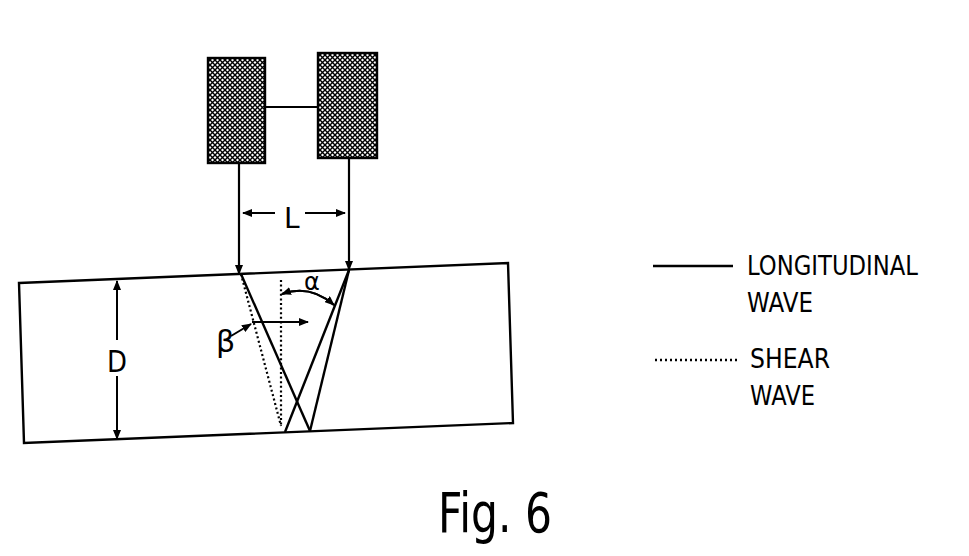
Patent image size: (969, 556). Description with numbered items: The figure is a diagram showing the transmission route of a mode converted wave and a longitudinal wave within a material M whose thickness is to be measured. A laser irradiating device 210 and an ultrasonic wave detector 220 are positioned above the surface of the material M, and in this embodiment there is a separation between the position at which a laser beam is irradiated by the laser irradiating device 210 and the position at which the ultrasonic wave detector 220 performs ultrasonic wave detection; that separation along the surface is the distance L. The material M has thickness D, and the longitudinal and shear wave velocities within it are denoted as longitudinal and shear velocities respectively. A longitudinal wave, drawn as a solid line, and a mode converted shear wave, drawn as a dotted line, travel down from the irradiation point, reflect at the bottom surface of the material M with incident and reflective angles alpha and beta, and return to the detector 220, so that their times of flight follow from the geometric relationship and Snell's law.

The laser irradiating device 210 is at (227, 56).
The ultrasonic wave detector 220 is at (335, 52).
The material M is at (460, 263).